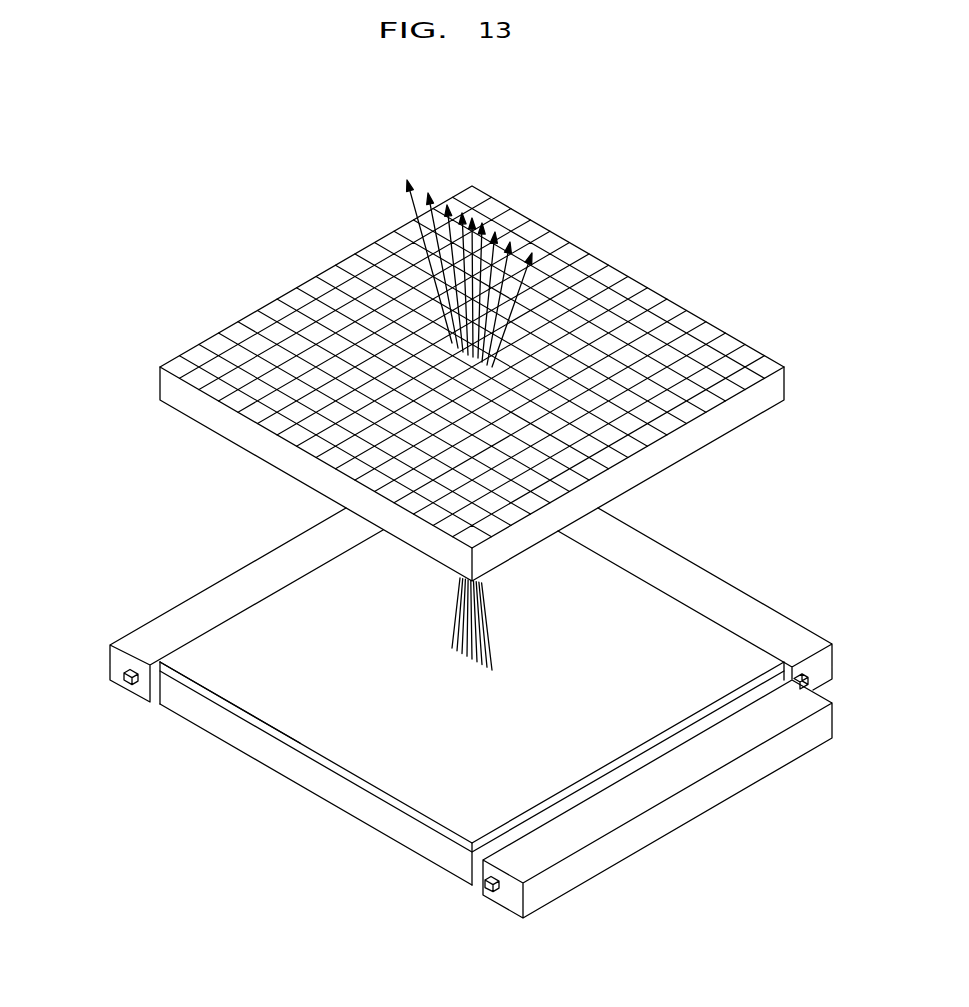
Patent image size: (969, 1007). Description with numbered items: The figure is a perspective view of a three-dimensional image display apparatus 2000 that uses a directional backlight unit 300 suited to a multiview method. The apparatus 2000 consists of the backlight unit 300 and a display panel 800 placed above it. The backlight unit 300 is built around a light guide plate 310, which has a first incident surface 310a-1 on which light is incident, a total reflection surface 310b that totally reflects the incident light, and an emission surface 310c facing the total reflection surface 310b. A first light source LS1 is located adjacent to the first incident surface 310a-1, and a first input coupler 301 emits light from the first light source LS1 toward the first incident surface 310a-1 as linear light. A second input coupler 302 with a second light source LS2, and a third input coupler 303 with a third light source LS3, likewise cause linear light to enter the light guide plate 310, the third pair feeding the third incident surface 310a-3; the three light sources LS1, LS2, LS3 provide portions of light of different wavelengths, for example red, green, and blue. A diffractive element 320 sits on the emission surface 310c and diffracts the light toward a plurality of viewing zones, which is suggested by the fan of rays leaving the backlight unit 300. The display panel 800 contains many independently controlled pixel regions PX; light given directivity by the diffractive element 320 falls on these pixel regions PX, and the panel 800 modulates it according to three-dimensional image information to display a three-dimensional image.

The 3D image display apparatus 2000 is at (138, 187).
The display panel 800 is at (743, 413).
The pixel regions PX is at (720, 350).
The backlight unit 300 is at (138, 569).
The first input coupler 301 is at (273, 543).
The second input coupler 302 is at (732, 583).
The third input coupler 303 is at (690, 822).
The light guide plate 310 is at (313, 780).
The diffractive element 320 is at (280, 735).
The first incident surface 310a-1 is at (150, 693).
The third incident surface 310a-3 is at (477, 882).
The total reflection surface 310b is at (403, 847).
The emission surface 310c is at (363, 792).
The first light source LS1 is at (124, 681).
The second light source LS2 is at (818, 682).
The third light source LS3 is at (495, 900).